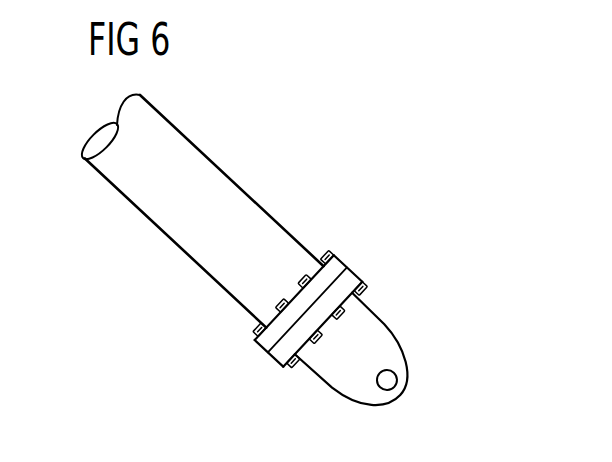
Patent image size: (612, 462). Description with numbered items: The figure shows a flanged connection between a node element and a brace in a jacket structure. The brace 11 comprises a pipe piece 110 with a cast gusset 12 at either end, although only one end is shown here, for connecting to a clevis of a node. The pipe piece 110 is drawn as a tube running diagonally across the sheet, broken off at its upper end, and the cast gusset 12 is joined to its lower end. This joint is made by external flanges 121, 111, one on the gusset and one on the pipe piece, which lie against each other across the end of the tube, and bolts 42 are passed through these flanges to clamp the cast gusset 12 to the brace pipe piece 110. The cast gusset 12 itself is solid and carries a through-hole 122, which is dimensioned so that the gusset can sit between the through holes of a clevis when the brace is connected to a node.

The brace 11 is at (318, 150).
The pipe piece 110 is at (220, 182).
The external flange 111 is at (340, 258).
The external flange 121 is at (363, 269).
The cast gusset 12 is at (383, 333).
The through-hole 122 is at (400, 388).
The bolt 42 is at (293, 371).